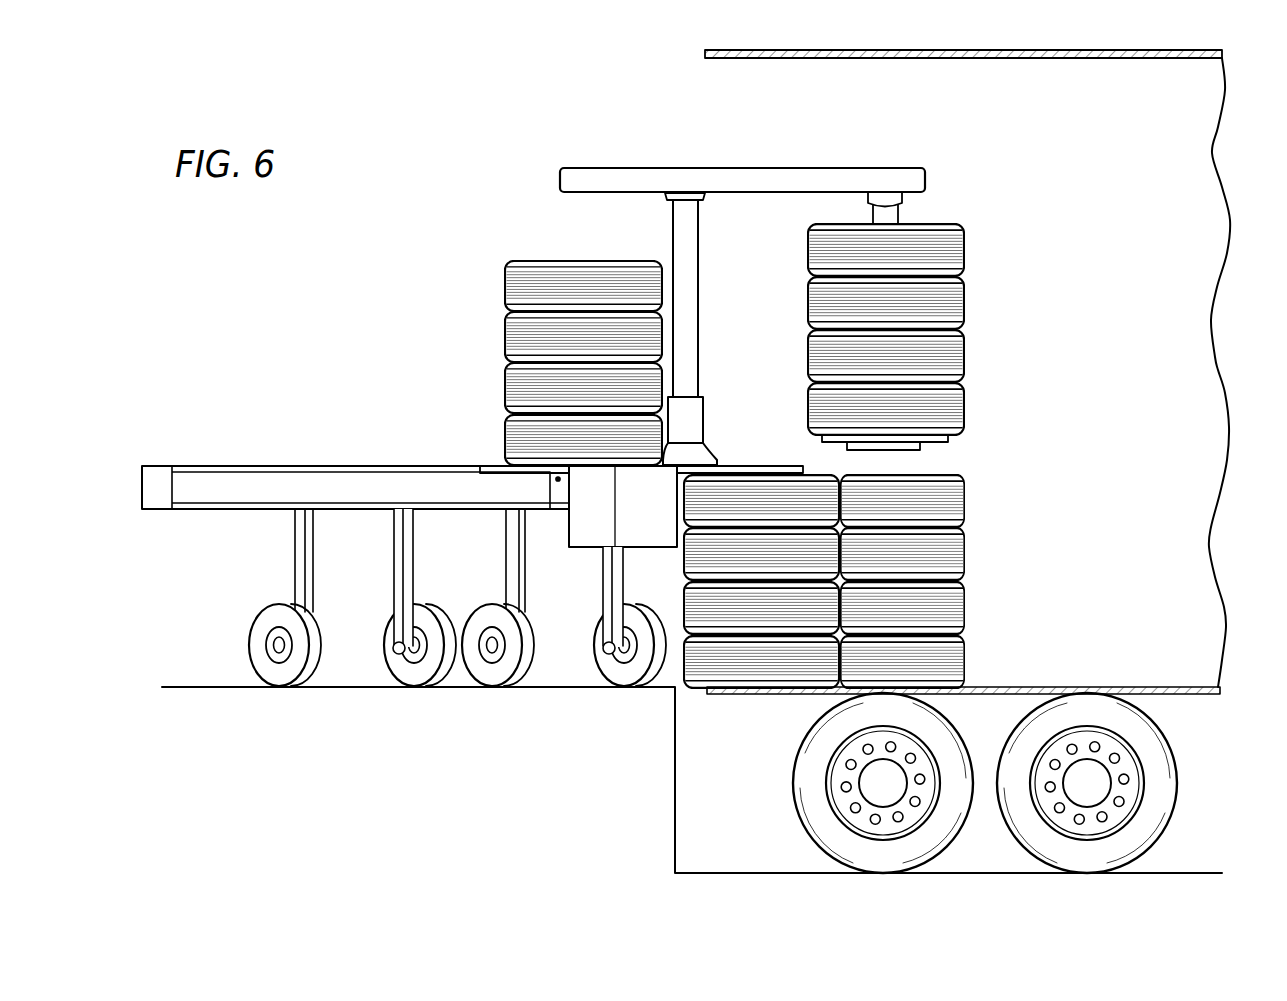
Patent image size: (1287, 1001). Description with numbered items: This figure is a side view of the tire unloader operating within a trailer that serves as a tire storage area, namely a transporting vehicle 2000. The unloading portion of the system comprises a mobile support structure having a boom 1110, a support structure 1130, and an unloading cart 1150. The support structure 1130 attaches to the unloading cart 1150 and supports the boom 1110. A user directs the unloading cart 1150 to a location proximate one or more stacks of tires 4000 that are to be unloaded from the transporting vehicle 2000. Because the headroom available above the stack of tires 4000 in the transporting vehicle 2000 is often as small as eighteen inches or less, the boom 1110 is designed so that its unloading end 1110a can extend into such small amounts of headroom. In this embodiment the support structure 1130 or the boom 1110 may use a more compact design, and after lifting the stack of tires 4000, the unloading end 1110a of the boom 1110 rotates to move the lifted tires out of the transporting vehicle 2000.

The transporting vehicle 2000 is at (891, 45).
The boom 1110 is at (768, 162).
The unloading end 1110a is at (934, 178).
The support structure 1130 is at (700, 312).
The stack of tires 4000 is at (983, 298).
The unloading cart 1150 is at (238, 492).